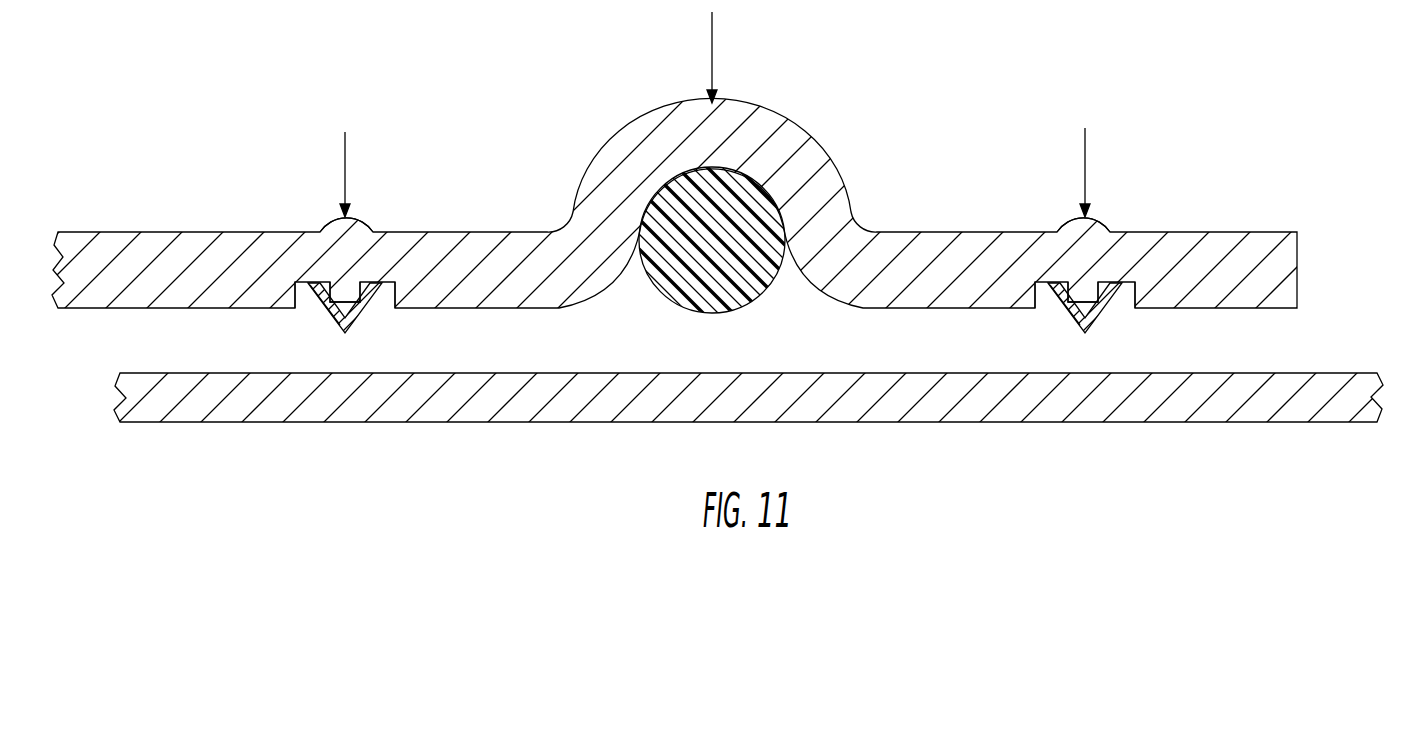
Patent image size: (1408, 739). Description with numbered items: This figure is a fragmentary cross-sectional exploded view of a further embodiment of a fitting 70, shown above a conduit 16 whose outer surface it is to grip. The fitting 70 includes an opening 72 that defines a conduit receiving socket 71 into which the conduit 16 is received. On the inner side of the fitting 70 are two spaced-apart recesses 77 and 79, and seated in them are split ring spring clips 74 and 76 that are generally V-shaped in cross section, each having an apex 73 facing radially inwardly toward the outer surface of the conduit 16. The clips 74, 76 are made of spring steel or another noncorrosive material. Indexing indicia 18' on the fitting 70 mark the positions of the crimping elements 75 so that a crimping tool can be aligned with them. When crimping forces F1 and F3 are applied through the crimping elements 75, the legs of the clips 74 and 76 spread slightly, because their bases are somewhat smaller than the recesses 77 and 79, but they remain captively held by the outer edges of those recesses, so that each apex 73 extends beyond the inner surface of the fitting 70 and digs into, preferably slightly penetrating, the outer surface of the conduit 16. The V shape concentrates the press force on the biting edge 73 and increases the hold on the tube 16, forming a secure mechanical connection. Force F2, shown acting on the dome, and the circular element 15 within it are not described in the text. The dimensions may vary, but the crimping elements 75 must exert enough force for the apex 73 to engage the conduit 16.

The wire 15 is at (733, 205).
The conduit 16 is at (857, 422).
The indexing indicia 18' is at (734, 203).
The fitting 70 is at (865, 136).
The conduit receiving socket 71 is at (1302, 354).
The opening 72 is at (1295, 335).
The apex 73 is at (346, 336).
The split ring spring clip 74 is at (326, 310).
The crimping element 75 is at (345, 298).
The split ring spring clip 76 is at (1066, 310).
The recess 77 is at (306, 297).
The recess 79 is at (382, 300).
The crimping force F1 is at (346, 170).
The second force F2 is at (713, 52).
The crimping force F3 is at (1086, 170).